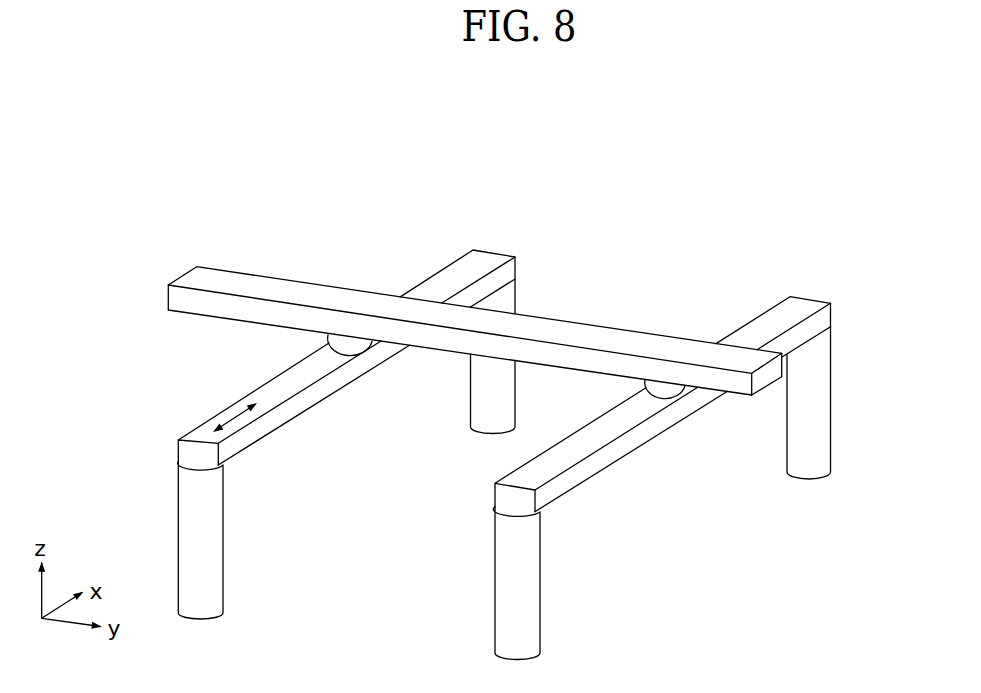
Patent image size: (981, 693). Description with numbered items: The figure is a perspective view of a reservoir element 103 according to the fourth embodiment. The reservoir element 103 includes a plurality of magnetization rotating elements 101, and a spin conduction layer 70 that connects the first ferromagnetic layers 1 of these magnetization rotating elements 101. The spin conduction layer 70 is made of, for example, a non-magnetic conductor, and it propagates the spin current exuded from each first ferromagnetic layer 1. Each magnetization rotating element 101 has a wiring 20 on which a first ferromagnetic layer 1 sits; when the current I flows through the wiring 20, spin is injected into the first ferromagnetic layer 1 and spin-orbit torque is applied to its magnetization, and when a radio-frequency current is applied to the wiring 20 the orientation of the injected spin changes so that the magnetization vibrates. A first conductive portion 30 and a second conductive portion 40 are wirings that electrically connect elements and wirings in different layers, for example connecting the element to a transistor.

The first ferromagnetic layer 1 is at (347, 343).
The wiring 20 is at (447, 265).
The first conductive portion 30 is at (208, 583).
The second conductive portion 40 is at (484, 403).
The spin conduction layer 70 is at (214, 283).
The magnetization rotating element 101 is at (541, 264).
The reservoir element 103 is at (707, 227).
The current I is at (237, 419).